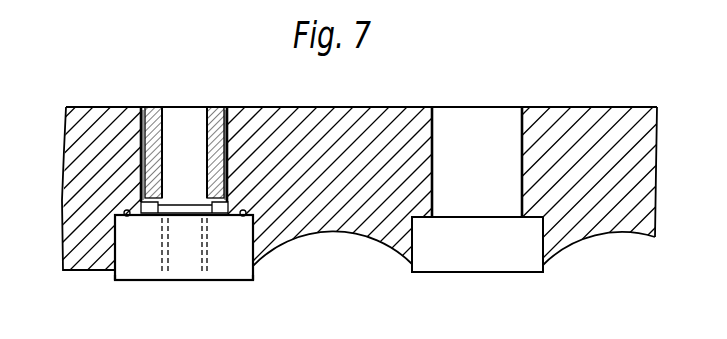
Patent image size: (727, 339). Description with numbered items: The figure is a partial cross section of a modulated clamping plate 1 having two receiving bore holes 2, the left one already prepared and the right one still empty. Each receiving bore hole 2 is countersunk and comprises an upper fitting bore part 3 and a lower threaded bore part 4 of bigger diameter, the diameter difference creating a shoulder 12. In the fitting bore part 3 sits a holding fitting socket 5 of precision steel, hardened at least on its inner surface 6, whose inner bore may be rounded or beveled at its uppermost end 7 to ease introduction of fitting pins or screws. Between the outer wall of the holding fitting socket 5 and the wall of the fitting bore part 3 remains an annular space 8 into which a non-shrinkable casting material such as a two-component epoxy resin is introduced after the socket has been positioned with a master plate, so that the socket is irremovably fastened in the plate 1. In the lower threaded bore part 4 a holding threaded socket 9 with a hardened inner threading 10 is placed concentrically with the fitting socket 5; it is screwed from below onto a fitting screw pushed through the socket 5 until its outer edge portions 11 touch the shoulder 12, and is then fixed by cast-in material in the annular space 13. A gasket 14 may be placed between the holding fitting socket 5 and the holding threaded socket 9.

The modulated clamping plate 1 is at (588, 128).
The receiving bore hole 2 is at (142, 111).
The fitting bore part 3 is at (520, 131).
The threaded bore part 4 is at (543, 268).
The holding fitting socket 5 is at (197, 119).
The inner surface 6 is at (163, 119).
The uppermost end 7 is at (205, 111).
The annular space 8 is at (227, 112).
The holding threaded socket 9 is at (148, 268).
The inner threading 10 is at (205, 262).
The outer edge portions 11 is at (137, 218).
The shoulder 12 is at (420, 222).
The annular space 13 is at (260, 300).
The gasket 14 is at (214, 208).